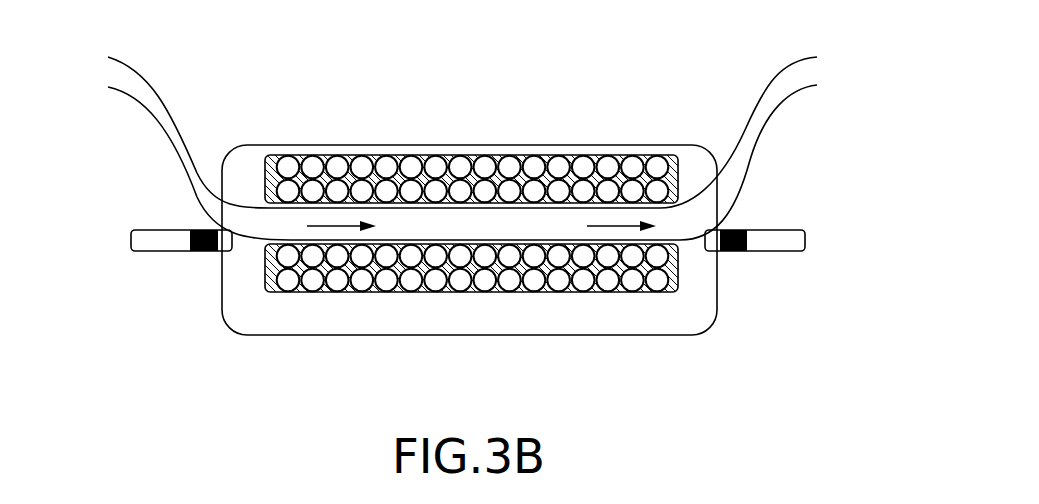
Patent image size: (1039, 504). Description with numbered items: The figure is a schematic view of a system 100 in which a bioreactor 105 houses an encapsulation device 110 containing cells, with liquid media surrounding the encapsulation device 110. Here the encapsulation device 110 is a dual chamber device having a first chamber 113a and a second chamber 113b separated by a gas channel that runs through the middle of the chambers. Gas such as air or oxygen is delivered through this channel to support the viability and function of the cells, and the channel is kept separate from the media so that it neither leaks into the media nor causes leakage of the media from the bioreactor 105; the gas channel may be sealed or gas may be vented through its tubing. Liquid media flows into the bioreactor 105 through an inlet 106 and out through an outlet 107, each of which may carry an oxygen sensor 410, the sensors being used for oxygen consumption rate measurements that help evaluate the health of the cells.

The system 100 is at (480, 219).
The bioreactor 105 is at (562, 337).
The inlet 106 is at (163, 238).
The outlet 107 is at (783, 243).
The encapsulation device 110 is at (597, 155).
The first chamber 113a is at (492, 133).
The second chamber 113b is at (670, 293).
The oxygen sensor 410 is at (200, 230).